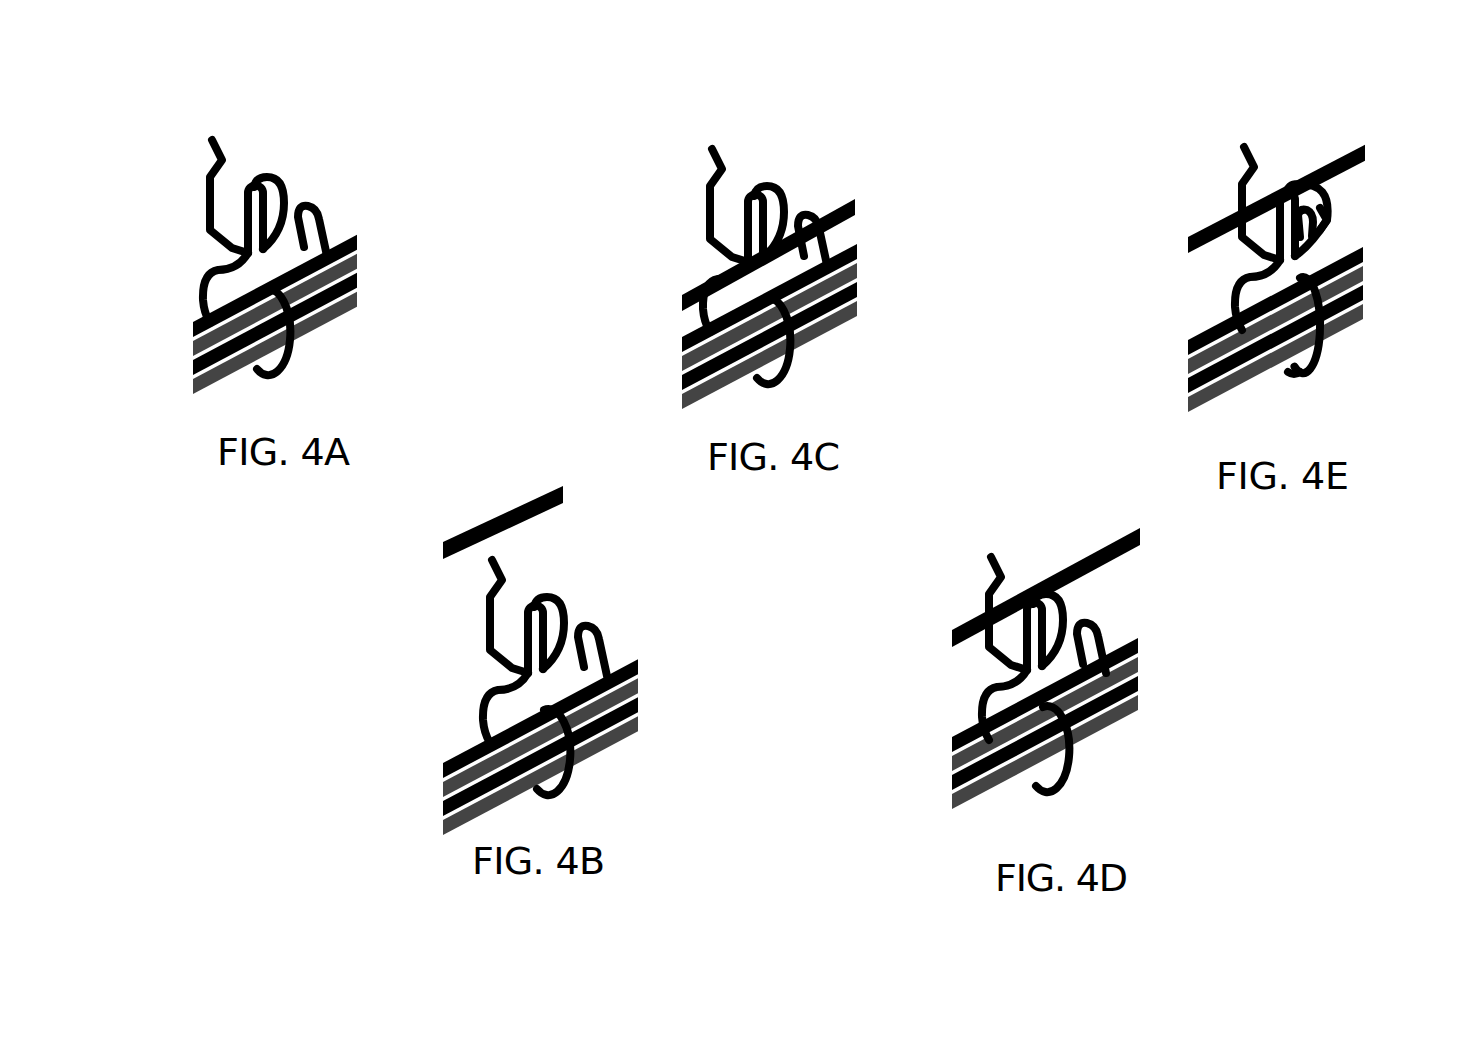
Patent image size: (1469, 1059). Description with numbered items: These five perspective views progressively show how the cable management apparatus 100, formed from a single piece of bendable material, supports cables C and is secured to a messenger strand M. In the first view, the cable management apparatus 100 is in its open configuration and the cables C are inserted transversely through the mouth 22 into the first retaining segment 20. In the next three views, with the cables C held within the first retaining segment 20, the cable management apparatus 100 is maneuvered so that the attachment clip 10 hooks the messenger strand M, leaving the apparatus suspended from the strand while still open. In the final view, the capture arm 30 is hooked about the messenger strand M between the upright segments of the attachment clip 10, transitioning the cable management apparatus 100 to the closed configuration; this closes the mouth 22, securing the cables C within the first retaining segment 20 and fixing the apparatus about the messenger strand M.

In FIG. 4A, the cable management apparatus 100 is at (228, 224).
In FIG. 4B, the cable management apparatus 100 is at (468, 665).
In FIG. 4C, the cable management apparatus 100 is at (704, 238).
In FIG. 4D, the cable management apparatus 100 is at (1012, 595).
In FIG. 4E, the cable management apparatus 100 is at (1232, 229).
In FIG. 4A, the attachment clip 10 is at (266, 215).
In FIG. 4B, the attachment clip 10 is at (558, 612).
In FIG. 4C, the attachment clip 10 is at (772, 185).
In FIG. 4D, the attachment clip 10 is at (1048, 578).
In FIG. 4E, the attachment clip 10 is at (1300, 180).
In FIG. 4A, the first retaining segment 20 is at (207, 290).
In FIG. 4B, the first retaining segment 20 is at (526, 734).
In FIG. 4C, the first retaining segment 20 is at (746, 323).
In FIG. 4D, the first retaining segment 20 is at (1025, 731).
In FIG. 4E, the first retaining segment 20 is at (1277, 316).
In FIG. 4A, the mouth 22 is at (283, 242).
In FIG. 4B, the mouth 22 is at (592, 651).
In FIG. 4C, the mouth 22 is at (812, 240).
In FIG. 4D, the mouth 22 is at (1091, 648).
In FIG. 4E, the mouth 22 is at (1306, 238).
In FIG. 4E, the capture arm 30 is at (1330, 220).
In FIG. 4B, the messenger strand M is at (540, 486).
In FIG. 4C, the messenger strand M is at (854, 198).
In FIG. 4D, the messenger strand M is at (1117, 540).
In FIG. 4E, the messenger strand M is at (1188, 253).
In FIG. 4A, the cables C is at (362, 285).
In FIG. 4B, the cables C is at (646, 704).
In FIG. 4C, the cables C is at (858, 292).
In FIG. 4D, the cables C is at (1142, 695).
In FIG. 4E, the cables C is at (1194, 372).